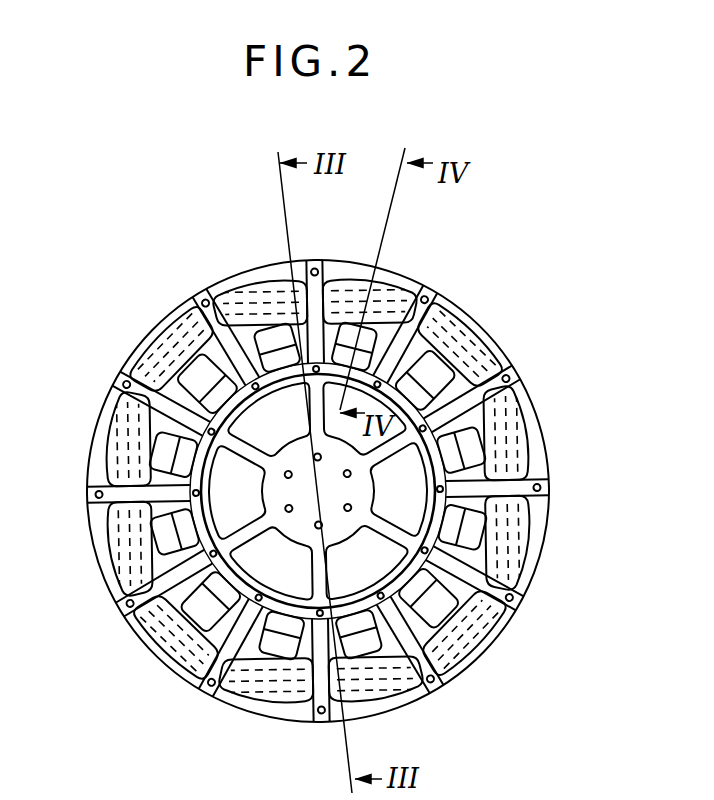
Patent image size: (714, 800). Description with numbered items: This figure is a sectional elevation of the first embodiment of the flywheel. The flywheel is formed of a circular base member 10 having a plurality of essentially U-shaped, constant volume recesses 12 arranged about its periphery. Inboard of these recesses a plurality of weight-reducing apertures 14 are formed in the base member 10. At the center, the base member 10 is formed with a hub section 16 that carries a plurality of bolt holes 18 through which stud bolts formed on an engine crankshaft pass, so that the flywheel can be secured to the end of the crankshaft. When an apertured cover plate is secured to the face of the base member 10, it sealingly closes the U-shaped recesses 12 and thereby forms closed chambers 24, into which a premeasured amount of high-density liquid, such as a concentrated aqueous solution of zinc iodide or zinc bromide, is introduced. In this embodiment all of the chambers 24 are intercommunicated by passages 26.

The circular base member 10 is at (97, 476).
The U-shaped recesses 12 is at (178, 358).
The weight-reducing apertures 14 is at (265, 558).
The hub section 16 is at (365, 487).
The bolt holes 18 is at (348, 512).
The closed chambers 24 is at (253, 680).
The passages 26 is at (185, 486).